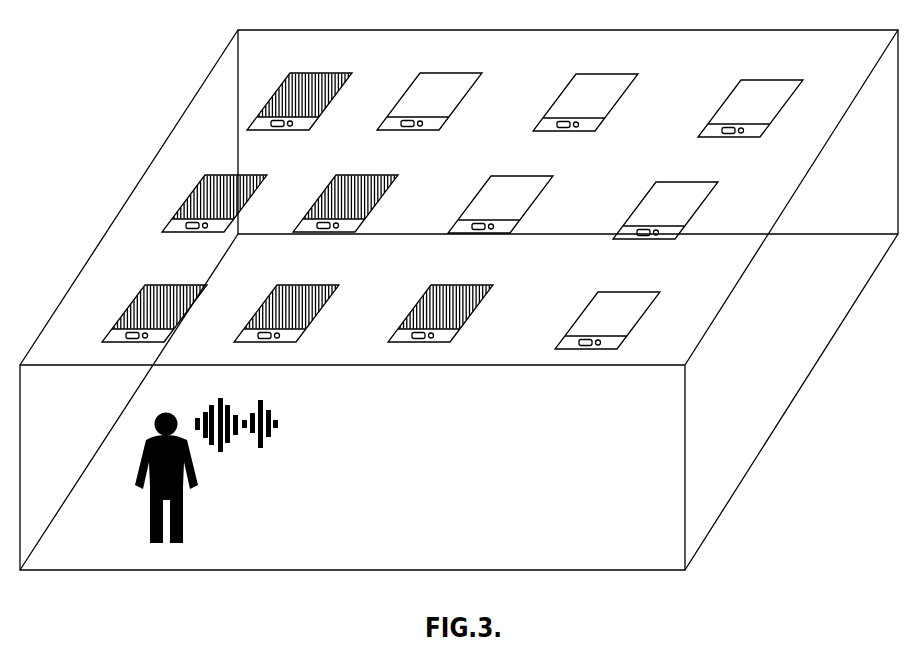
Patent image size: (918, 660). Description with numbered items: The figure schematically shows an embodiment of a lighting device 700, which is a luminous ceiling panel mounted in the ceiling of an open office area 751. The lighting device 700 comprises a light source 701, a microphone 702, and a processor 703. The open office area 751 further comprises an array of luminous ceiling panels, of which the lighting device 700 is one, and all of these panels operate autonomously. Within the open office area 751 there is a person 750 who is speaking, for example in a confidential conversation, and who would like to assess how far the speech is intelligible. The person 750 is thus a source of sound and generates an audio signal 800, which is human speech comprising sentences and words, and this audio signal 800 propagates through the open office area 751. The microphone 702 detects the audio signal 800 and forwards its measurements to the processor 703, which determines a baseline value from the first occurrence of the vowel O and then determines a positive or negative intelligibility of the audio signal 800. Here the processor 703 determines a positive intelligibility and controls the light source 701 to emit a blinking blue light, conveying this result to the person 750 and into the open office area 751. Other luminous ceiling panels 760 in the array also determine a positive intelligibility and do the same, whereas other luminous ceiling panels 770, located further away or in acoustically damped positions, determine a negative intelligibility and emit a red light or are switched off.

The lighting device 700 is at (275, 301).
The light source 701 is at (335, 286).
The microphone 702 is at (300, 340).
The processor 703 is at (247, 332).
The person 750 is at (138, 505).
The open office area 751 is at (727, 433).
The luminous ceiling panels 760 is at (277, 90).
The luminous ceiling panels 770 is at (407, 95).
The audio signal 800 is at (292, 446).